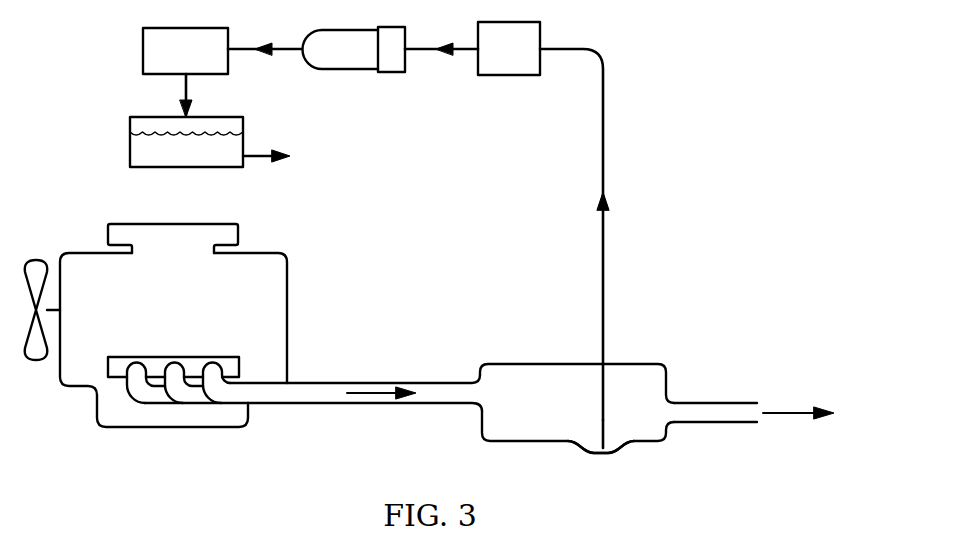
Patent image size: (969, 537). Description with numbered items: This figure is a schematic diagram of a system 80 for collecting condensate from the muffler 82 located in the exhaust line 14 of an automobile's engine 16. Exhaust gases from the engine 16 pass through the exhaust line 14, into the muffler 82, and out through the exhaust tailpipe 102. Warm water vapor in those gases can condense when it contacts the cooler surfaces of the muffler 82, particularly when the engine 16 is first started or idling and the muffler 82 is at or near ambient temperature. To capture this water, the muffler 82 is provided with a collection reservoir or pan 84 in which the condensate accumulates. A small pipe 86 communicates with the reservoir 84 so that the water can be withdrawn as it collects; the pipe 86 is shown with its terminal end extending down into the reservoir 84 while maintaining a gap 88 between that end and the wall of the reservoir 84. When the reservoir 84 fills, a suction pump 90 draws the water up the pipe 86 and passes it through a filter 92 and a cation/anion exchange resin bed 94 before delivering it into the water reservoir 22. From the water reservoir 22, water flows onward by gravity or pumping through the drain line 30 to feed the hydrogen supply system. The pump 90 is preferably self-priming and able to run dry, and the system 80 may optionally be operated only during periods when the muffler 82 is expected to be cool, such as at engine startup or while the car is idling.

The exhaust line 14 is at (305, 403).
The engine 16 is at (190, 430).
The water reservoir 22 is at (243, 120).
The drain line 30 is at (252, 160).
The system 80 is at (662, 86).
The muffler 82 is at (556, 364).
The collection reservoir or pan 84 is at (620, 452).
The pipe 86 is at (603, 162).
The gap 88 is at (598, 448).
The suction pump 90 is at (520, 75).
The filter 92 is at (340, 69).
The cation/anion exchange resin bed 94 is at (143, 47).
The exhaust tailpipe 102 is at (709, 425).